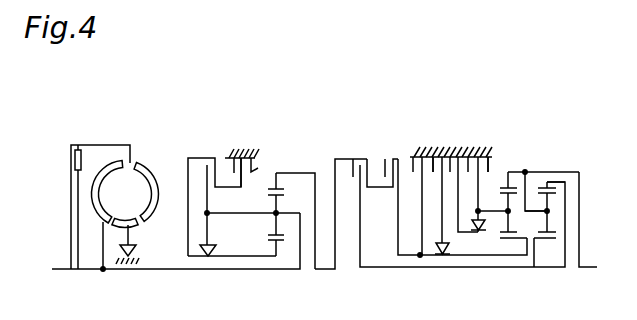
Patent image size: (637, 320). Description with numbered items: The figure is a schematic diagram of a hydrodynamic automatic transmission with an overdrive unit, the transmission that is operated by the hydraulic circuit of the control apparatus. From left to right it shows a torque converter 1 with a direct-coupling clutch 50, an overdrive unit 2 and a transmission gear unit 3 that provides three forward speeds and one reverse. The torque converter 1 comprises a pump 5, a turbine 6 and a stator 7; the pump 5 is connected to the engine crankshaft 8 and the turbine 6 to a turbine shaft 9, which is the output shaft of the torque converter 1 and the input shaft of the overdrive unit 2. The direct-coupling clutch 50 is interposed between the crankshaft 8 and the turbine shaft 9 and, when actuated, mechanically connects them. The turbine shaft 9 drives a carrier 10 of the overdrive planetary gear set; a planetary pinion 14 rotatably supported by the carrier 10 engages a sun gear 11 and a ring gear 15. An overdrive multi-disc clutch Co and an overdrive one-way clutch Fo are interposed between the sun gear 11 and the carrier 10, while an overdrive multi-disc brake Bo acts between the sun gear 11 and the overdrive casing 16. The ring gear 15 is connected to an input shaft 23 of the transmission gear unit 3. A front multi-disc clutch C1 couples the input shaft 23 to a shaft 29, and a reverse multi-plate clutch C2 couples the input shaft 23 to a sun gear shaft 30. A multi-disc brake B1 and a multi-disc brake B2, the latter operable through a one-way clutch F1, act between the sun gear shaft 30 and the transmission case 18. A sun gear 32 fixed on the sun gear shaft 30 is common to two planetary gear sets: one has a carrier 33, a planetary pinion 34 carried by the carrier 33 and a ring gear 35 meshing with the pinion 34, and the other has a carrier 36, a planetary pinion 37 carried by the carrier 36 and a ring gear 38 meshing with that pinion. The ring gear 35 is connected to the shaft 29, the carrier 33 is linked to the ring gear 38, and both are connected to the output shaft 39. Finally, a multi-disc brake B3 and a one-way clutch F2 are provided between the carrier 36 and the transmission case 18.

The torque converter 1 is at (109, 188).
The overdrive unit 2 is at (244, 170).
The transmission gear unit 3 is at (459, 169).
The pump 5 is at (147, 166).
The turbine 6 is at (112, 166).
The stator 7 is at (136, 227).
The engine crankshaft 8 is at (60, 269).
The turbine shaft 9 is at (232, 269).
The carrier 10 is at (280, 194).
The sun gear 11 is at (268, 240).
The planetary pinion 14 is at (268, 195).
The ring gear 15 is at (269, 188).
The overdrive casing 16 is at (240, 152).
The transmission case 18 is at (466, 150).
The input shaft 23 is at (326, 269).
The shaft 29 is at (400, 268).
The sun gear shaft 30 is at (416, 255).
The sun gear 32 is at (535, 240).
The carrier 33 is at (538, 189).
The planetary pinion 34 is at (549, 212).
The ring gear 35 is at (557, 188).
The carrier 36 is at (500, 193).
The planetary pinion 37 is at (498, 239).
The ring gear 38 is at (525, 172).
The output shaft 39 is at (592, 267).
The direct-coupling clutch 50 is at (76, 150).
The overdrive multi-disc clutch Co is at (206, 166).
The overdrive multi-disc brake Bo is at (258, 168).
The overdrive one-way clutch Fo is at (221, 244).
The front multi-disc clutch C1 is at (360, 160).
The reverse multi-plate clutch C2 is at (393, 160).
The multi-disc brake B1 is at (413, 157).
The multi-disc brake B2 is at (434, 157).
The multi-disc brake B3 is at (490, 157).
The one-way clutch F1 is at (436, 256).
The one-way clutch F2 is at (473, 236).